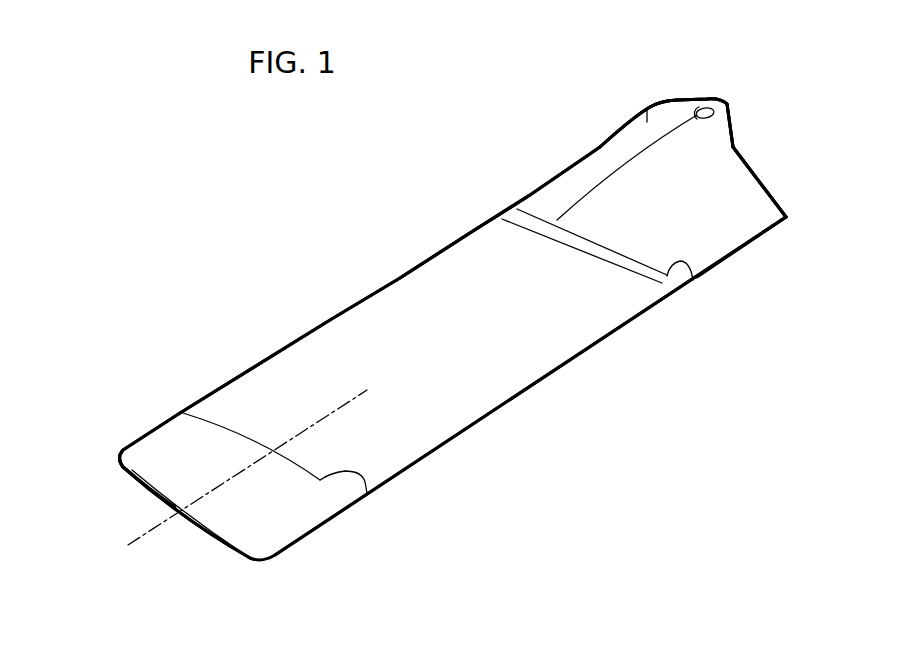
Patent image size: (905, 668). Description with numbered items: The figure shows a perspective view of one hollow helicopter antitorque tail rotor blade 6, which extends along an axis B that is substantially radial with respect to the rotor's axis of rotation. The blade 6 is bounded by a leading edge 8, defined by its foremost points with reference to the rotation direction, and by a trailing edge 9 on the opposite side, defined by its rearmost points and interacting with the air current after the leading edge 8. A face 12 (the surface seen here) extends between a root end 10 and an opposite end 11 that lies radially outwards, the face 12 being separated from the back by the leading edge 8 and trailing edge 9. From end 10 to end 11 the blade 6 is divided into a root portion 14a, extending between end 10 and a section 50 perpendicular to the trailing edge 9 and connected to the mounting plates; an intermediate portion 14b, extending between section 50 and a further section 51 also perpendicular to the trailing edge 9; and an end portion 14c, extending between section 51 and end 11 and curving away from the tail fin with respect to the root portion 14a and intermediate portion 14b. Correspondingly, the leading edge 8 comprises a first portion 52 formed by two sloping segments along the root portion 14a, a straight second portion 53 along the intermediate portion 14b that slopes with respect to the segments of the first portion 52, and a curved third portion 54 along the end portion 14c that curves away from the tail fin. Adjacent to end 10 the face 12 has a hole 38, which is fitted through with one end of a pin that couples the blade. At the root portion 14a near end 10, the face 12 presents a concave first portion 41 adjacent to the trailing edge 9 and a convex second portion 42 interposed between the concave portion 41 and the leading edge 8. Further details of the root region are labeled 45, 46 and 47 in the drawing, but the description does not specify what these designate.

The blade 6 is at (440, 193).
The leading edge 8 is at (155, 393).
The trailing edge 9 is at (458, 445).
The end 10 is at (753, 122).
The end 11 is at (253, 563).
The face 12 is at (417, 320).
The root portion 14a is at (600, 160).
The intermediate portion 14b is at (282, 383).
The end portion 14c is at (145, 450).
The hole 38 is at (697, 115).
The concave first portion 41 is at (732, 235).
The convex second portion 42 is at (647, 110).
The top edge of tip 45 is at (685, 100).
The tip corner 46 is at (727, 100).
The inclined tip edge 47 is at (770, 195).
The section 50 is at (693, 280).
The section 51 is at (367, 493).
The first portion 52 is at (623, 123).
The straight second portion 53 is at (473, 233).
The curved third portion 54 is at (135, 483).
The axis B is at (153, 533).